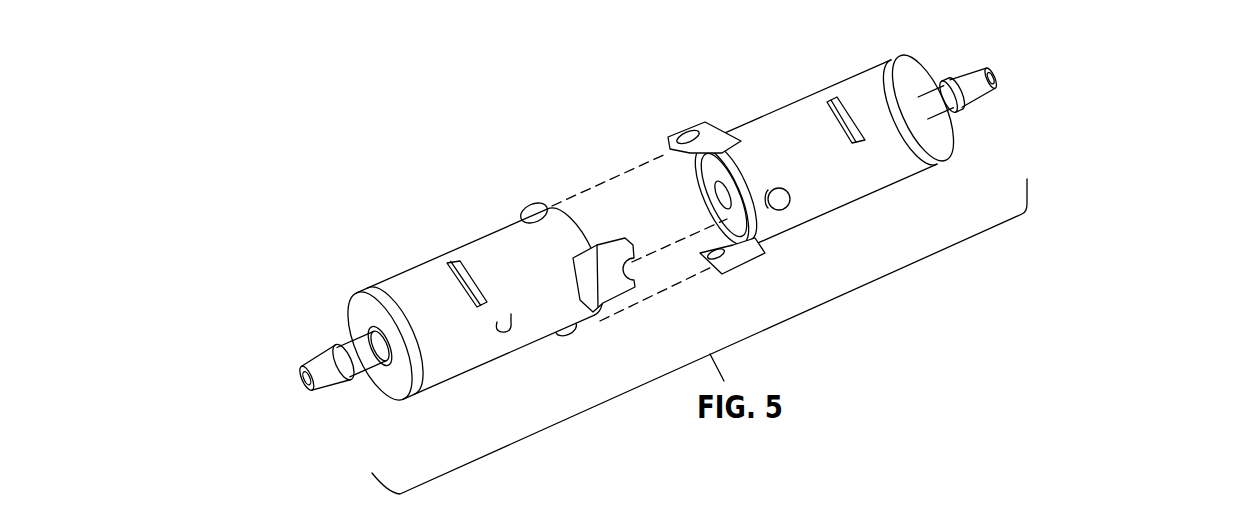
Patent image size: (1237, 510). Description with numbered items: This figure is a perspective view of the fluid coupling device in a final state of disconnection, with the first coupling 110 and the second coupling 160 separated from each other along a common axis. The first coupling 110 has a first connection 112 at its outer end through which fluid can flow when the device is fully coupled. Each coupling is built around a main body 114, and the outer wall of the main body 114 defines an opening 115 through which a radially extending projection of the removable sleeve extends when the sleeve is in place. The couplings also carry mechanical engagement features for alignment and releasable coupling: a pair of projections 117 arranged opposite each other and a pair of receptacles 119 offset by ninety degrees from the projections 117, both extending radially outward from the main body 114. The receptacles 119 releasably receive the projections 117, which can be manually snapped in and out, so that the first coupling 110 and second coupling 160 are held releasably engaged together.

The first coupling 110 is at (403, 244).
The first connection 112 is at (313, 358).
The main body 114 is at (509, 336).
The opening 115 is at (473, 303).
The projection 117 is at (528, 206).
The receptacle 119 is at (603, 242).
The second coupling 160 is at (772, 82).